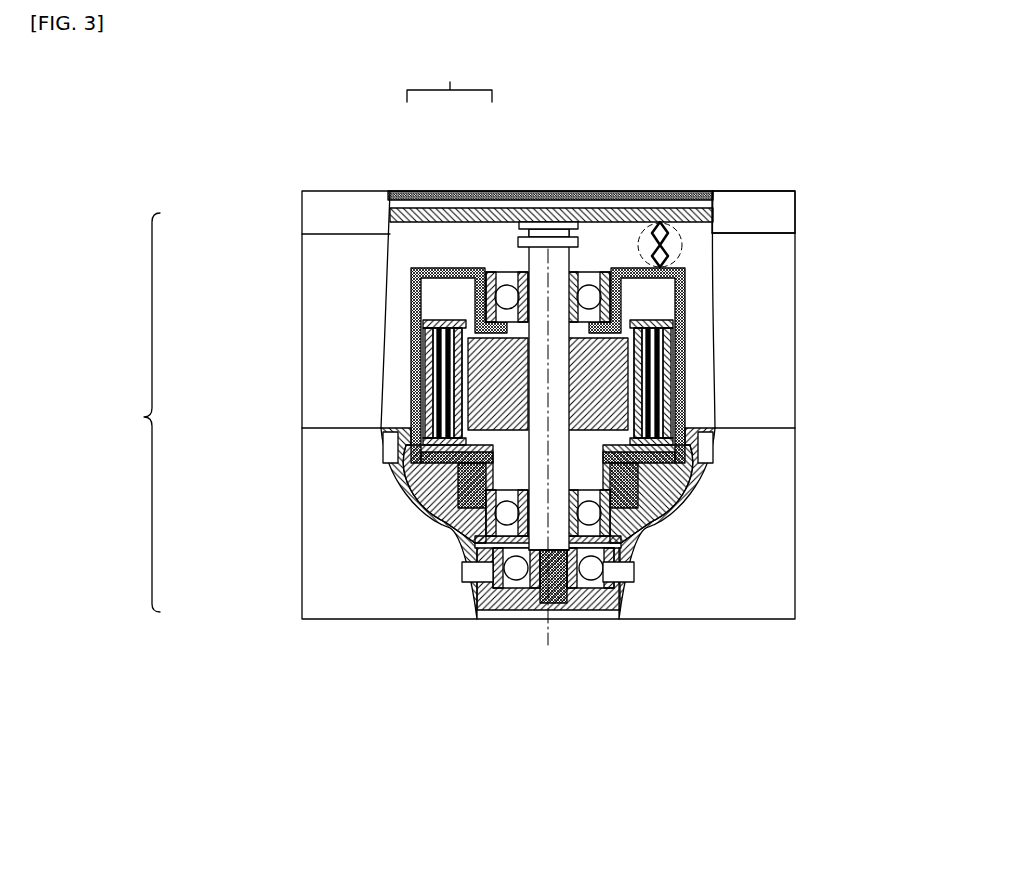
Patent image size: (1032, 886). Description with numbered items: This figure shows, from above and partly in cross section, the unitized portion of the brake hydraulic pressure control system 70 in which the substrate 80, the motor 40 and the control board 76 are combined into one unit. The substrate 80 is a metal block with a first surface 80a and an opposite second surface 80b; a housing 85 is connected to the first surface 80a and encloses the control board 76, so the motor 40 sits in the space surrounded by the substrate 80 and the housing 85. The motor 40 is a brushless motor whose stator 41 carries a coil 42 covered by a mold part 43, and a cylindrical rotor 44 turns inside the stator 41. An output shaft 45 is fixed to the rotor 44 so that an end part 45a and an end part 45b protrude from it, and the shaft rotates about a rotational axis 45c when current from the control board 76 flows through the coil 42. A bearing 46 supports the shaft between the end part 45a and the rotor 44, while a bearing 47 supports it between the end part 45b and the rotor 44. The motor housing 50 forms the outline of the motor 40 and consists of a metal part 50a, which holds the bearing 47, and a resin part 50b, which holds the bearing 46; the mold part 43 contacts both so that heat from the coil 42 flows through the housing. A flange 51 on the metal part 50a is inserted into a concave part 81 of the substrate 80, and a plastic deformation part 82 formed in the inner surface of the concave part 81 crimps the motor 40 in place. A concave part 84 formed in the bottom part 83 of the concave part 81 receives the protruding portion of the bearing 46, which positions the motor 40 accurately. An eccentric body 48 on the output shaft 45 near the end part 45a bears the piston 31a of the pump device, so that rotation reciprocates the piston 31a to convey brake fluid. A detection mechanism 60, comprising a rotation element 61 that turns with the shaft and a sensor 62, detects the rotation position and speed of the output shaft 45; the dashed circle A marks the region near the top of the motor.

The piston 31a is at (473, 565).
The motor 40 is at (129, 412).
The stator 41 is at (438, 303).
The coil 42 is at (531, 427).
The mold part 43 is at (425, 322).
The rotor 44 is at (415, 445).
The output shaft 45 is at (397, 453).
The end part of output shaft 45a is at (560, 612).
The end part of output shaft 45b is at (575, 222).
The rotational axis 45c is at (547, 612).
The bearing 46 is at (423, 530).
The bearing 47 is at (485, 268).
The eccentric body 48 is at (505, 619).
The motor housing 50 is at (410, 500).
The metal part 50a is at (421, 455).
The resin part 50b is at (462, 490).
The flange 51 is at (700, 462).
The detection mechanism 60 is at (449, 80).
The rotation element 61 is at (518, 244).
The sensor 62 is at (532, 222).
The brake hydraulic pressure control system 70 is at (808, 113).
The control board 76 is at (612, 214).
The substrate 80 is at (806, 558).
The first surface 80a is at (760, 427).
The second surface 80b is at (772, 619).
The concave part 81 is at (688, 400).
The plastic deformation part 82 is at (703, 453).
The bottom part 83 is at (665, 505).
The concave part 84 is at (420, 556).
The housing 85 is at (787, 213).
The region A is at (684, 250).